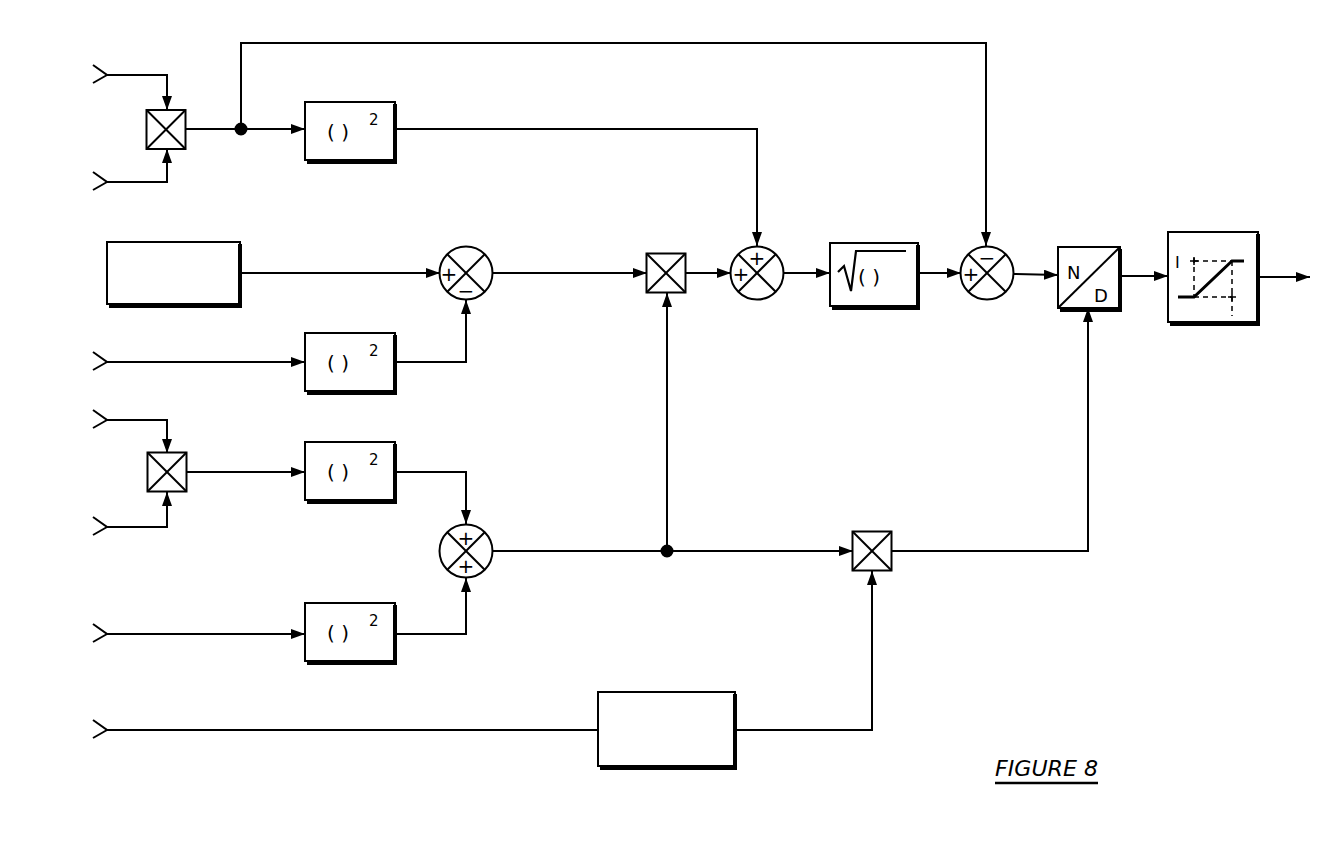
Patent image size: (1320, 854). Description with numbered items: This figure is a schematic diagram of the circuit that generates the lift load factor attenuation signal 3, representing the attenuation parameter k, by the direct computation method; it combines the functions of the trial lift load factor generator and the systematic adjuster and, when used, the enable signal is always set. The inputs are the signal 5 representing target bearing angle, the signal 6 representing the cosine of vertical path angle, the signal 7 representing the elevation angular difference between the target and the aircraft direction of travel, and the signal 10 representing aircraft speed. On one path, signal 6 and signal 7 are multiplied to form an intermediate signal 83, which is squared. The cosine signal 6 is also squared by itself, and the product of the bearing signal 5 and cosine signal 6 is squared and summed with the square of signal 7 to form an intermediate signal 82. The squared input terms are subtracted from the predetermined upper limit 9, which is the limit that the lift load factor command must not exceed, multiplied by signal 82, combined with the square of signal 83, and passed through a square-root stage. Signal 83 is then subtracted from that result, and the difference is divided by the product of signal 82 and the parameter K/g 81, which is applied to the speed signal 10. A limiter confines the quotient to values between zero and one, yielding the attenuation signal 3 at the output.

The lift load factor attenuation signal 3 is at (1284, 253).
The target bearing angle signal 5 is at (130, 414).
The cosine of vertical path angle signal 6 is at (199, 283).
The elevation angular difference signal 7 is at (199, 390).
The predetermined upper limit 9 is at (169, 241).
The aircraft speed signal 10 is at (345, 711).
The parameter K/g 81 is at (706, 690).
The intermediate signal 82 is at (673, 425).
The intermediate signal 83 is at (586, 144).